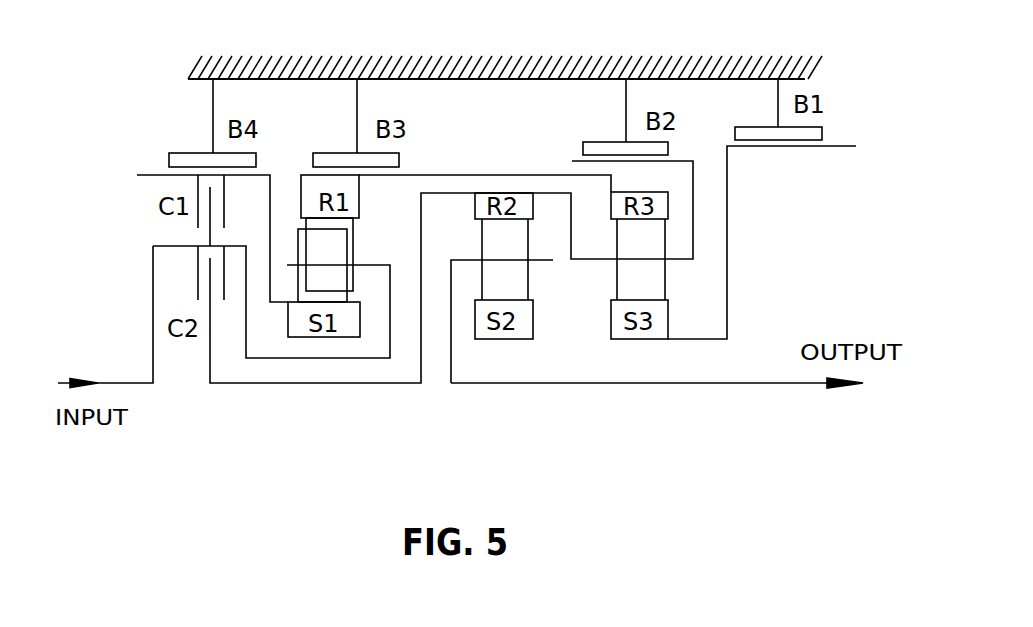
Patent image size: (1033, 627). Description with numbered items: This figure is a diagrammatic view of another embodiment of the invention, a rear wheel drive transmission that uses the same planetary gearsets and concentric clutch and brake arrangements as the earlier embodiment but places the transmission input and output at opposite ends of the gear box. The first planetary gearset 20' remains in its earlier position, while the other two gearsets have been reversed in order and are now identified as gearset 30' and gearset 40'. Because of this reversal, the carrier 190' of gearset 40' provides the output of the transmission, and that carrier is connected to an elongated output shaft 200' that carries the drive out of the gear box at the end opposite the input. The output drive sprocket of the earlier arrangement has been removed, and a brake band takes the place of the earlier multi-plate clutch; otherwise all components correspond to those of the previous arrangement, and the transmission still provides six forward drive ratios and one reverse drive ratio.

The planetary gearset 20' is at (324, 328).
The planetary gearset 40' is at (504, 337).
The planetary gearset 30' is at (642, 336).
The carrier 190' is at (474, 354).
The output shaft 200' is at (657, 420).